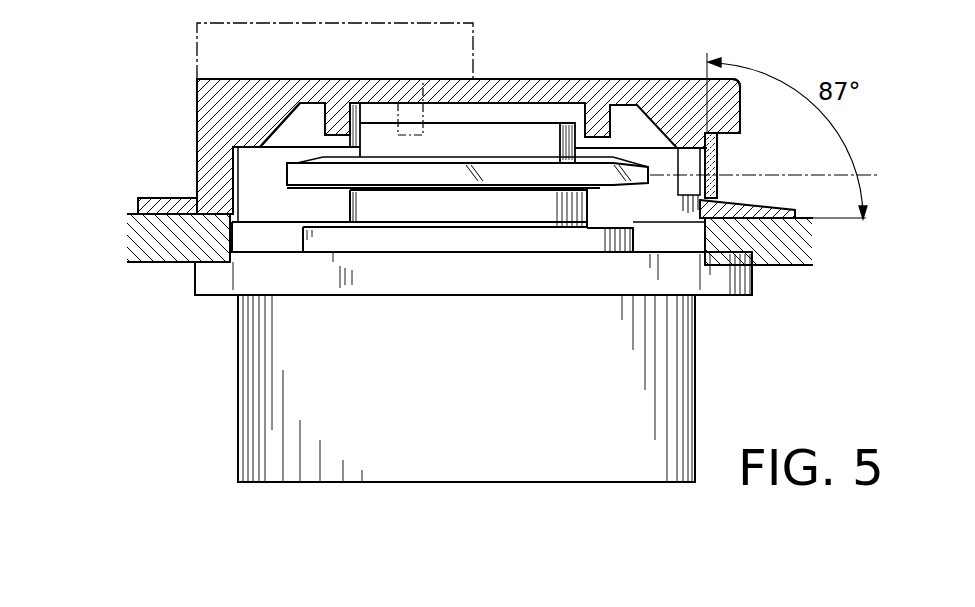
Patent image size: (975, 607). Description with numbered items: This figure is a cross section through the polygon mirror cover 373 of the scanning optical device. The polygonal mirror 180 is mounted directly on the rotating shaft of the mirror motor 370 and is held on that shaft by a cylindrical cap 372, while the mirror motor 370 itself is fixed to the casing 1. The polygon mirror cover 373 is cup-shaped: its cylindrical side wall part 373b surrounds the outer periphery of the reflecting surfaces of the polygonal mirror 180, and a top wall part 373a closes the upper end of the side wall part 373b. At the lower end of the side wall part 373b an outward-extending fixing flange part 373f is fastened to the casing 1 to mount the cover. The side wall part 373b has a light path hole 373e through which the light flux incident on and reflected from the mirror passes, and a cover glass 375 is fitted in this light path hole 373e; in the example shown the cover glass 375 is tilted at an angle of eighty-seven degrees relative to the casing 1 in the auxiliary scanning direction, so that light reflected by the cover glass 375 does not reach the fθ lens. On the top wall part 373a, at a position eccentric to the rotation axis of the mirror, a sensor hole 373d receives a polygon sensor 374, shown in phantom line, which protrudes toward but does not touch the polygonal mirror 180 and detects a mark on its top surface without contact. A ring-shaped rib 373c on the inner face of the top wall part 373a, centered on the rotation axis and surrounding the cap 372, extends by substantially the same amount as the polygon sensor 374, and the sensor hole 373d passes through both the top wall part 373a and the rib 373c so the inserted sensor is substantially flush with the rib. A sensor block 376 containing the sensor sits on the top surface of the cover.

The casing 1 is at (162, 243).
The polygonal mirror 180 is at (297, 176).
The mirror motor 370 is at (262, 413).
The cylindrical cap 372 is at (543, 137).
The polygon mirror cover 373 is at (645, 80).
The top wall part 373a is at (517, 79).
The cylindrical side wall part 373b is at (207, 142).
The ring-shaped rib 373c is at (326, 125).
The sensor hole 373d is at (436, 61).
The light path hole 373e is at (720, 192).
The fixing flange part 373f is at (153, 198).
The polygon sensor 374 is at (361, 79).
The cover glass 375 is at (720, 147).
The sensor block 376 is at (196, 41).